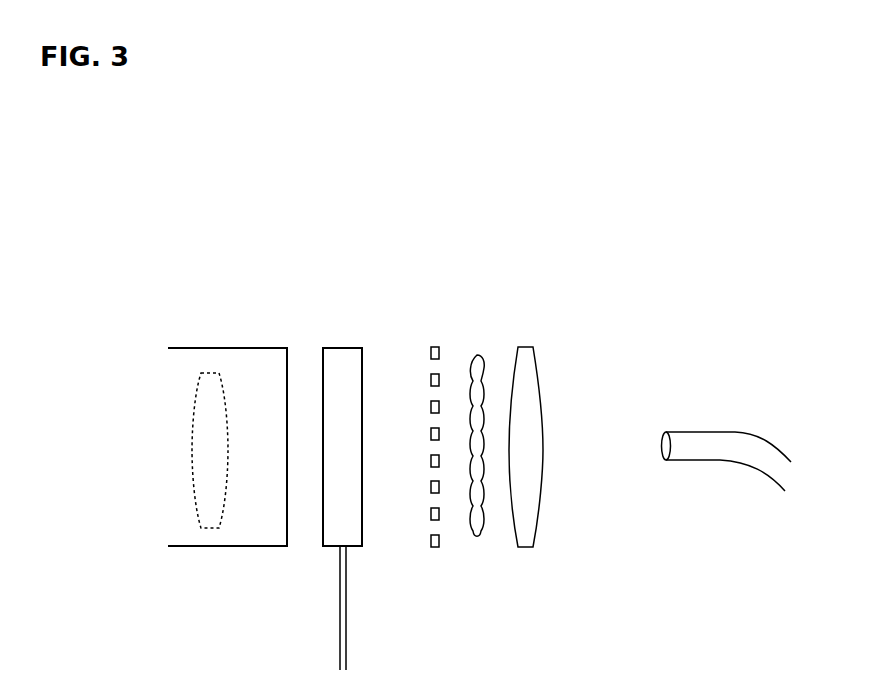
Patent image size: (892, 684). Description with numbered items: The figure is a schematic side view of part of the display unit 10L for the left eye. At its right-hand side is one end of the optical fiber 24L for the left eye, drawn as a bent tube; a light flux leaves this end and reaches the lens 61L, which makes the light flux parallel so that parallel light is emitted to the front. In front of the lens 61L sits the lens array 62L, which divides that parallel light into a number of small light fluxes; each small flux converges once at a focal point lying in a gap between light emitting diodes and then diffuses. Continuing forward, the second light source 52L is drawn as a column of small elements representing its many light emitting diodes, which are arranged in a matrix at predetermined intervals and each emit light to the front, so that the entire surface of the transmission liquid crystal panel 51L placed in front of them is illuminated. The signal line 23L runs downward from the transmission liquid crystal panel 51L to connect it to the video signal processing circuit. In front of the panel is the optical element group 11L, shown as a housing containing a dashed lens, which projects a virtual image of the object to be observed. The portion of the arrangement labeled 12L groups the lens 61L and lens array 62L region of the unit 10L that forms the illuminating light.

The display unit for the left eye 10L is at (396, 172).
The left projection optical system 12L is at (528, 282).
The optical element group 11L is at (224, 347).
The transmission liquid crystal panel 51L is at (344, 347).
The signal line 23L is at (340, 618).
The second light source 52L is at (435, 548).
The lens array 62L is at (477, 540).
The lens 61L is at (543, 495).
The optical fibers for the left eye 24L is at (716, 430).